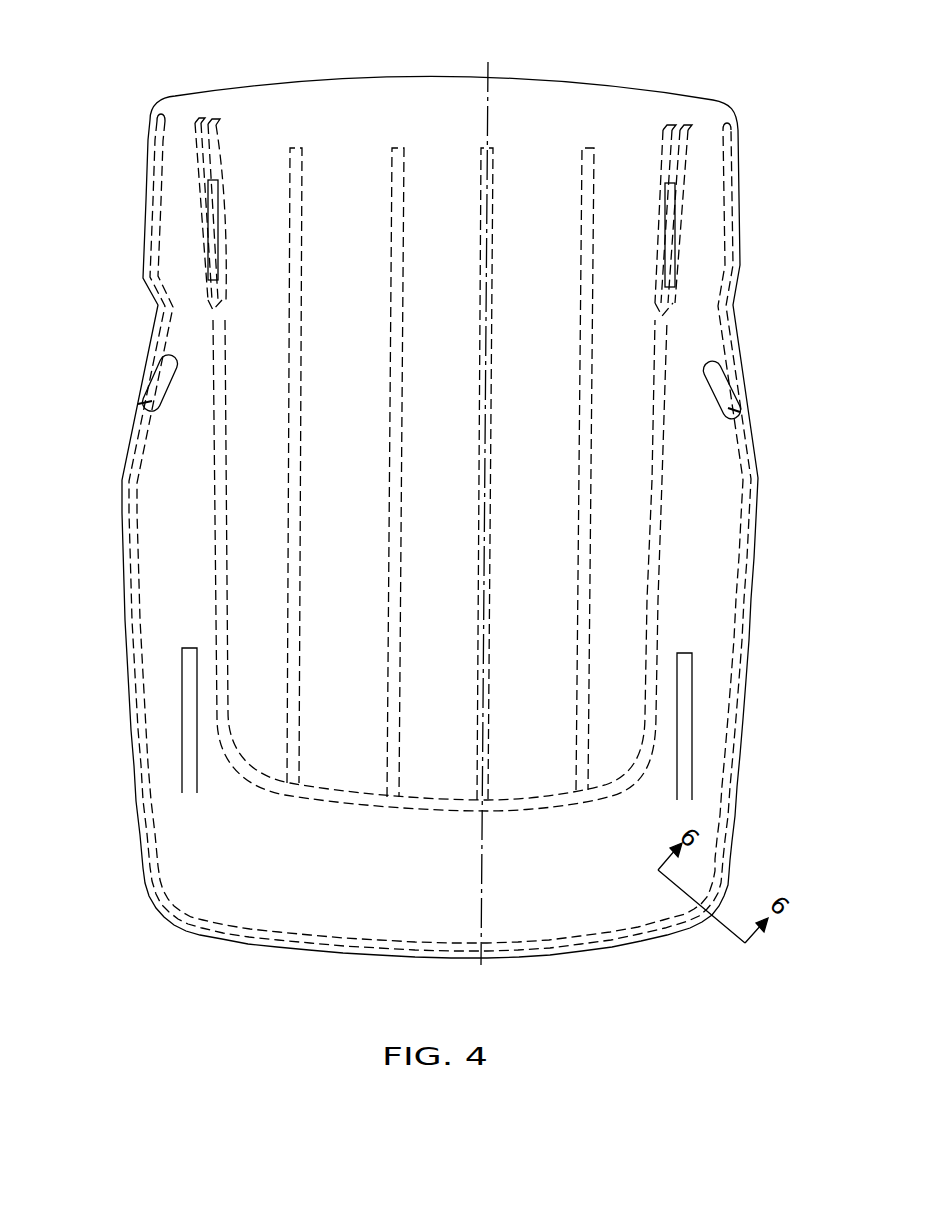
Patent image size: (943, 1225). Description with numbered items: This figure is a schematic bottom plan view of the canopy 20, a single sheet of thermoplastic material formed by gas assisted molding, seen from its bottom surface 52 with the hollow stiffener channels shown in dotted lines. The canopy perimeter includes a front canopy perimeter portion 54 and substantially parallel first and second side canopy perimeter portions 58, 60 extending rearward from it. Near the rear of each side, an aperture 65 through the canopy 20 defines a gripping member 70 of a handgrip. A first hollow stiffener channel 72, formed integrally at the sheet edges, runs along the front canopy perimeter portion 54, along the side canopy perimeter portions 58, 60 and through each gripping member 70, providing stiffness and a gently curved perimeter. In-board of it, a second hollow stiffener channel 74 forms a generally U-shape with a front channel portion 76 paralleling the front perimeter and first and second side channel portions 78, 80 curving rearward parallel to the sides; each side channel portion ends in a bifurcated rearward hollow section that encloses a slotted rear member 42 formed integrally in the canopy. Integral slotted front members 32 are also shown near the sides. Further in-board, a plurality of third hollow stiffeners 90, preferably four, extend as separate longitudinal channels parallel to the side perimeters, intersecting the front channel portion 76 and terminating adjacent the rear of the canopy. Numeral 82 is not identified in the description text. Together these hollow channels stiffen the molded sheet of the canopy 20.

The canopy 20 is at (566, 80).
The slotted front member 32 is at (198, 780).
The slotted rear member 42 is at (218, 257).
The bottom surface 52 is at (519, 203).
The front canopy perimeter portion 54 is at (570, 955).
The first side canopy perimeter portion 58 is at (755, 623).
The second side canopy perimeter portion 60 is at (125, 609).
The aperture 65 is at (150, 404).
The gripping member 70 is at (148, 396).
The first hollow stiffener channel 72 is at (150, 357).
The second hollow stiffener channel 74 is at (222, 582).
The front channel portion 76 is at (365, 806).
The first side channel portion 78 is at (218, 553).
The second side channel portion 80 is at (660, 555).
The bracket 82 is at (232, 216).
The third hollow stiffener 90 is at (392, 372).